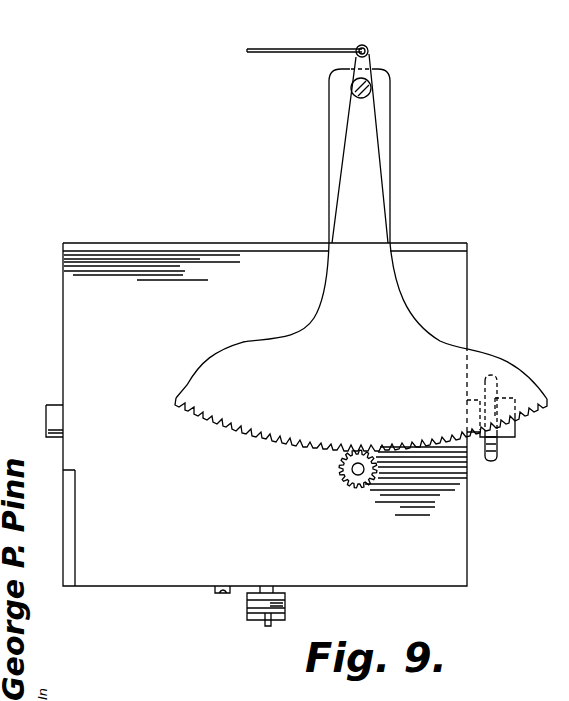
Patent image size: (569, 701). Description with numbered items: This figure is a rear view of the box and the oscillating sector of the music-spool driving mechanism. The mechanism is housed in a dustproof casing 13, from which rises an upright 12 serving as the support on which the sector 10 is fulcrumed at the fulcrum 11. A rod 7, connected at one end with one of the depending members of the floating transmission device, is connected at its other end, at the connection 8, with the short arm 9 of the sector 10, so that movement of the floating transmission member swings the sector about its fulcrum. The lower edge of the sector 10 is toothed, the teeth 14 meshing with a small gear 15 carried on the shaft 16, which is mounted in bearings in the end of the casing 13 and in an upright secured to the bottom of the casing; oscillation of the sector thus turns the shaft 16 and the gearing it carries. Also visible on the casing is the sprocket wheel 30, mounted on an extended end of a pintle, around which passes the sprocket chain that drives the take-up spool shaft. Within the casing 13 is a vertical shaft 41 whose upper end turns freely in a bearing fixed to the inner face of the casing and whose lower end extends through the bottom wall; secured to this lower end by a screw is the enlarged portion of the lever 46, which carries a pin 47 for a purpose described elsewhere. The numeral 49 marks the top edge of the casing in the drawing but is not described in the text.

The rod 7 is at (294, 47).
The connection 8 is at (370, 47).
The short arm 9 is at (366, 59).
The sector 10 is at (361, 321).
The fulcrum 11 is at (371, 88).
The upright 12 is at (386, 158).
The dustproof casing 13 is at (447, 311).
The teeth 14 is at (274, 446).
The small gear 15 is at (341, 468).
The shaft 16 is at (356, 474).
The sprocket wheel 30 is at (497, 452).
The vertical shaft 41 is at (270, 585).
The lever 46 is at (287, 605).
The pin 47 is at (258, 622).
The tank 49 is at (212, 237).